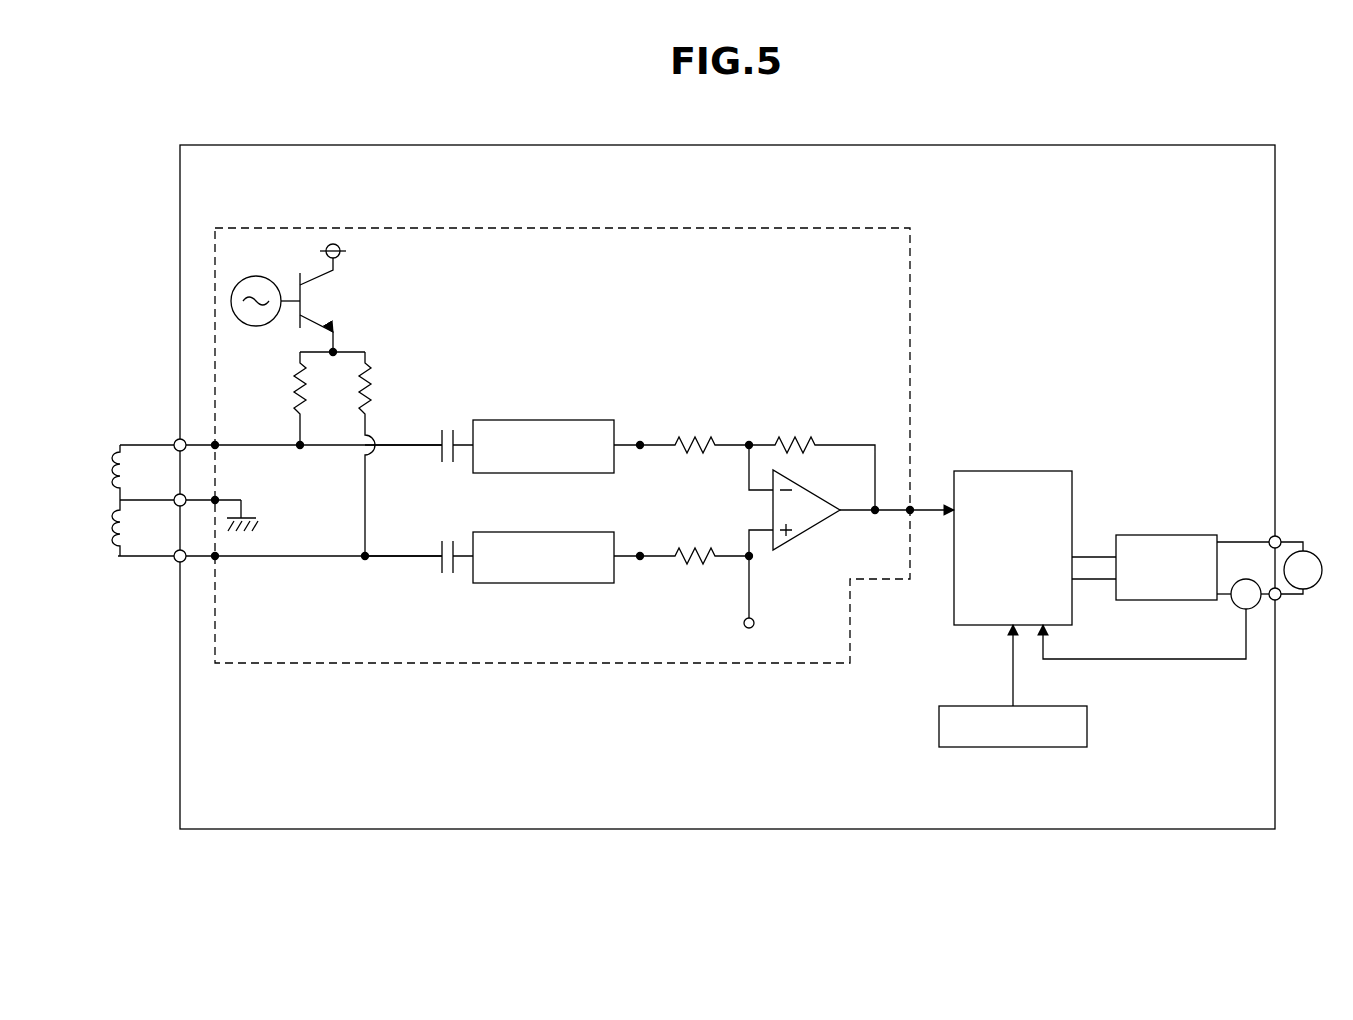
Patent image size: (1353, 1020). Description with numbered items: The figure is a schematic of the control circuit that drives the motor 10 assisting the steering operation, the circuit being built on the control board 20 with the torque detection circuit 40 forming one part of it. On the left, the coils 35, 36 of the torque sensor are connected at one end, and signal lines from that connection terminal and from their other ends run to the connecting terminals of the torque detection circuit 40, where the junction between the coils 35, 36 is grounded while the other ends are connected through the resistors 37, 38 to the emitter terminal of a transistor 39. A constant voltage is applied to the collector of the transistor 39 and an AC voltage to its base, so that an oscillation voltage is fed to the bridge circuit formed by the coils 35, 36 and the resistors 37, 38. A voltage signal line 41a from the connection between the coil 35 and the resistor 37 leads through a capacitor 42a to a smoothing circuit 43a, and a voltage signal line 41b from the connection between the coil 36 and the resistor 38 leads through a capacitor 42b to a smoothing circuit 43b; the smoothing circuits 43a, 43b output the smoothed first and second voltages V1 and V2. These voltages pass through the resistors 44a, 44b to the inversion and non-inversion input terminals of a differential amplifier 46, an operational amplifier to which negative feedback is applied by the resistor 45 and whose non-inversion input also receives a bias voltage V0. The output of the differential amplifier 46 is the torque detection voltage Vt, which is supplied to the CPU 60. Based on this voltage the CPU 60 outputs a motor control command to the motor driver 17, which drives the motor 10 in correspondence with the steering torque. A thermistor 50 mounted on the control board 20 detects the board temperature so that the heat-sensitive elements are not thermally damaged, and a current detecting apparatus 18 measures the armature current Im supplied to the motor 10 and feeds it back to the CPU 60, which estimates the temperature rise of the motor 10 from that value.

The motor 10 is at (1316, 552).
The motor driver 17 is at (1170, 535).
The current detecting apparatus 18 is at (1235, 606).
The control board 20 is at (1050, 145).
The coil 35 is at (110, 445).
The coil 36 is at (118, 558).
The resistor 37 is at (292, 392).
The resistor 38 is at (375, 372).
The transistor 39 is at (328, 299).
The torque detection circuit 40 is at (912, 293).
The voltage signal line 41a is at (409, 443).
The voltage signal line 41b is at (391, 560).
The capacitor 42a is at (456, 432).
The capacitor 42b is at (457, 568).
The smoothing circuit 43a is at (540, 420).
The smoothing circuit 43b is at (554, 584).
The resistor 44a is at (700, 440).
The resistor 44b is at (702, 552).
The resistor 45 is at (805, 440).
The differential amplifier 46 is at (807, 534).
The thermistor 50 is at (1013, 748).
The CPU 60 is at (1015, 471).